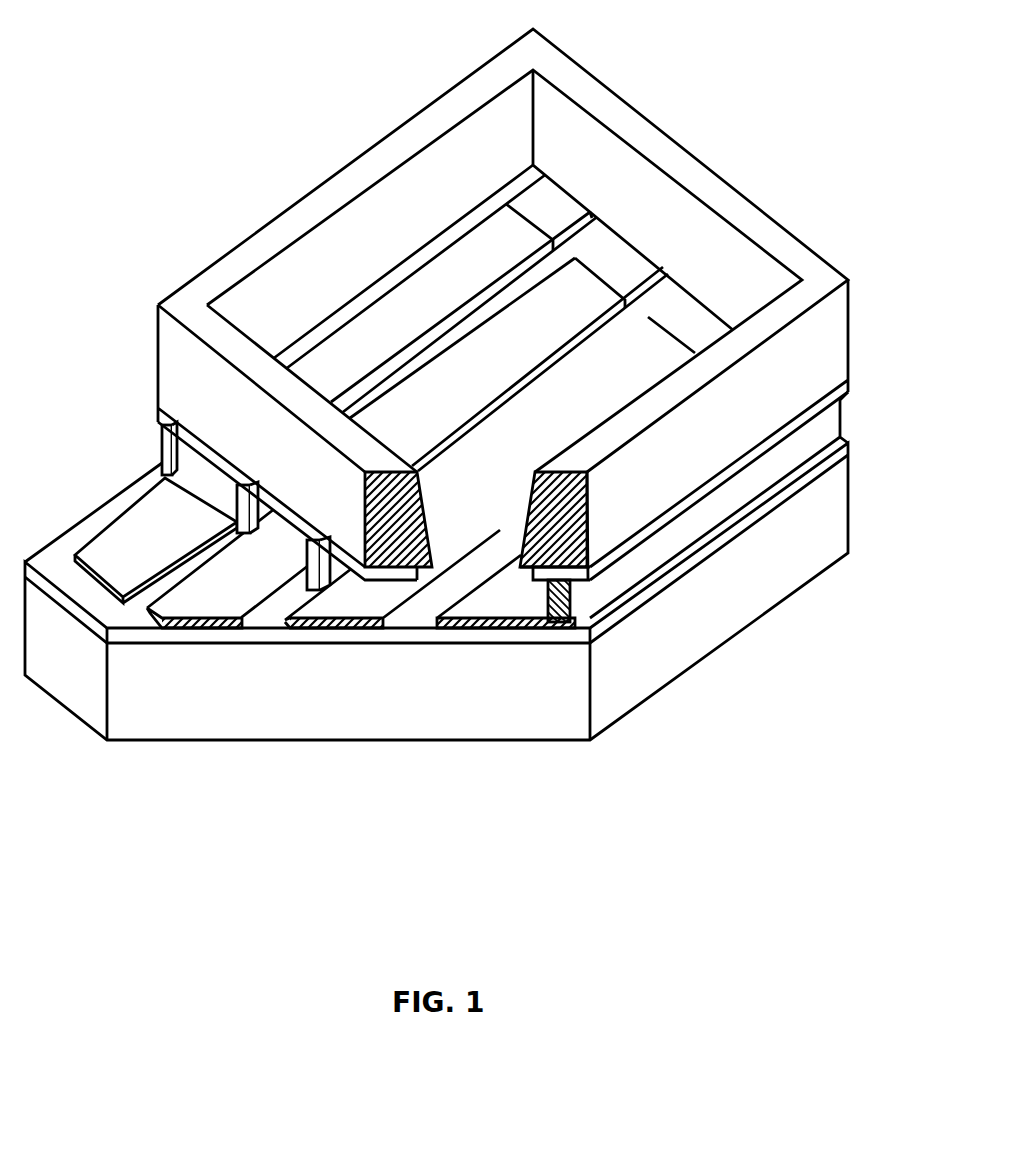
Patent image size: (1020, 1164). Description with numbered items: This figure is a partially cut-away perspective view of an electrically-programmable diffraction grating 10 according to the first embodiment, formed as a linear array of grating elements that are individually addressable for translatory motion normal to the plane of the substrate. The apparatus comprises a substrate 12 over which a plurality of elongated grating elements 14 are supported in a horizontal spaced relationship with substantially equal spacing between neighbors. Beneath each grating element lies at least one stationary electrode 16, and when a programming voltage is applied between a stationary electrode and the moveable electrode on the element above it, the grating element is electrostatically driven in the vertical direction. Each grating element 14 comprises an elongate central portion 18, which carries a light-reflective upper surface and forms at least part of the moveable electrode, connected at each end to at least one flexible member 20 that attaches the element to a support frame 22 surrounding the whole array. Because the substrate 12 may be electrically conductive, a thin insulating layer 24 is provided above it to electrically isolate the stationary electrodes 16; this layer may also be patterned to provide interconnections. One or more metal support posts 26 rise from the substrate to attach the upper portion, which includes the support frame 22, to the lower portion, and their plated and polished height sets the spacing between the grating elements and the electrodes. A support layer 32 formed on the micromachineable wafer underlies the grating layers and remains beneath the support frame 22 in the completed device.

The programmable diffraction grating 10 is at (471, 449).
The substrate 12 is at (712, 615).
The grating element 14 is at (501, 304).
The stationary electrode 16 is at (110, 540).
The central portion 18 is at (503, 270).
The flexible member 20 is at (600, 274).
The support frame 22 is at (832, 343).
The insulating layer 24 is at (838, 452).
The support post 26 is at (240, 497).
The support layer 32 is at (162, 412).